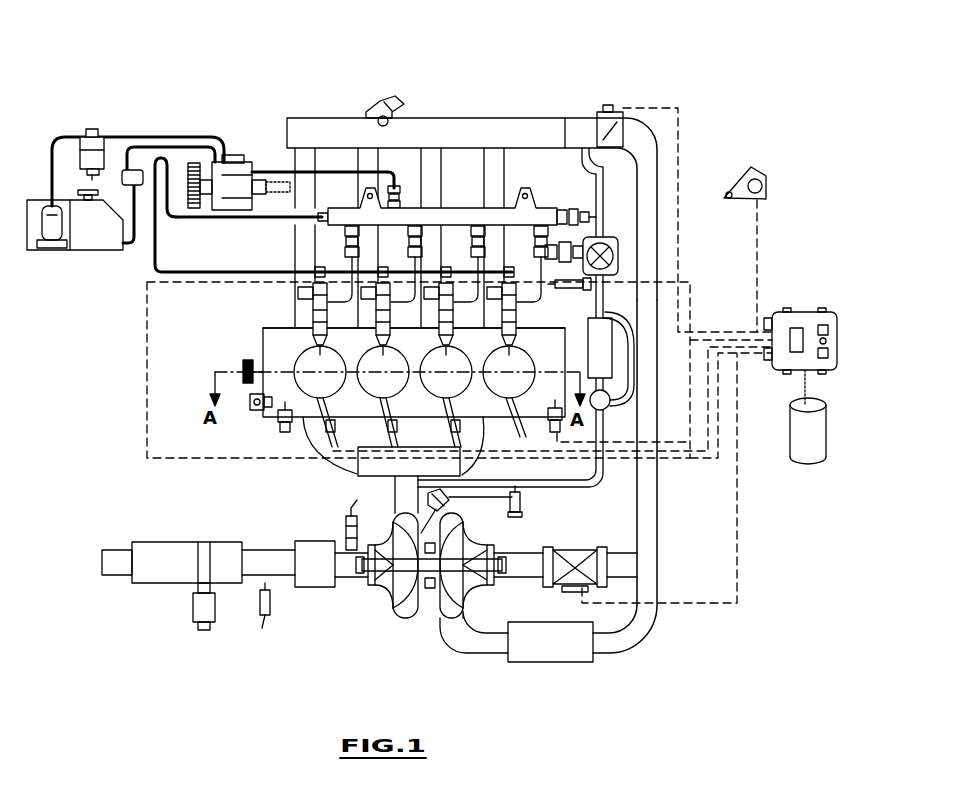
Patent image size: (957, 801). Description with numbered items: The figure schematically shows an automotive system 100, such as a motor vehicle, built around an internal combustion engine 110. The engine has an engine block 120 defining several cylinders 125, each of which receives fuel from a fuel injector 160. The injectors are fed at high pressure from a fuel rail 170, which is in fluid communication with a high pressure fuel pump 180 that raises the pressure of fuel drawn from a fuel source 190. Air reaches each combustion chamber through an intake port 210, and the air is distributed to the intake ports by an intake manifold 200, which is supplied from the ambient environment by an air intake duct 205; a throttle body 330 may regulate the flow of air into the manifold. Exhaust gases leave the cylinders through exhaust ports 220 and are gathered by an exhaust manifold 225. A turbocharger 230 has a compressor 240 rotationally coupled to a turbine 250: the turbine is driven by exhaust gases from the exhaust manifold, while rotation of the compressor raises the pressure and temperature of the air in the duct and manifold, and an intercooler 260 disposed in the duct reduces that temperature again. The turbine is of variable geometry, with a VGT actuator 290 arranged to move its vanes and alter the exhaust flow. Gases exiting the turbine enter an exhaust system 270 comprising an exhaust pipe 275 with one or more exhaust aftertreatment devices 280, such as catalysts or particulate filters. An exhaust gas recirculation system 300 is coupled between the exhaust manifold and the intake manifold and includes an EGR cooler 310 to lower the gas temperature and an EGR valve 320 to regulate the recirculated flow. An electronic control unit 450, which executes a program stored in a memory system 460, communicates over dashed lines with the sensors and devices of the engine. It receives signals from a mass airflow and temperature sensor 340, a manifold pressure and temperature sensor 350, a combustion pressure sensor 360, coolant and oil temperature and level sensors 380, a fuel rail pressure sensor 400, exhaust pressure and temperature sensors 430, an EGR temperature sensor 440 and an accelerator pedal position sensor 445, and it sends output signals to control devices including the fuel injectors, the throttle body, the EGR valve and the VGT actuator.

The automotive system 100 is at (203, 99).
The internal combustion engine 110 is at (524, 98).
The engine block 120 is at (263, 331).
The cylinder 125 is at (527, 352).
The fuel injector 160 is at (318, 306).
The fuel rail 170 is at (320, 222).
The high pressure fuel pump 180 is at (245, 158).
The fuel source 190 is at (96, 237).
The intake manifold 200 is at (440, 132).
The air intake duct 205 is at (653, 527).
The intake port 210 is at (303, 330).
The exhaust port 220 is at (313, 427).
The exhaust manifold 225 is at (347, 504).
The turbocharger 230 is at (425, 576).
The compressor 240 is at (455, 592).
The turbine 250 is at (403, 585).
The intercooler 260 is at (572, 650).
The exhaust system 270 is at (188, 576).
The exhaust pipe 275 is at (112, 565).
The exhaust aftertreatment device 280 is at (157, 565).
The VGT actuator 290 is at (450, 508).
The exhaust gas recirculation system 300 is at (572, 500).
The EGR cooler 310 is at (601, 362).
The EGR valve 320 is at (604, 237).
The throttle body 330 is at (612, 103).
The mass airflow and temperature sensor 340 is at (572, 587).
The manifold pressure and temperature sensor 350 is at (378, 104).
The combustion pressure sensor 360 is at (383, 466).
The coolant and oil temperature and level sensors 380 is at (276, 420).
The fuel rail pressure sensor 400 is at (586, 213).
The exhaust pressure and temperature sensors 430 is at (212, 632).
The EGR temperature sensor 440 is at (600, 283).
The accelerator pedal position sensor 445 is at (760, 175).
The electronic control unit 450 is at (805, 312).
The memory system 460 is at (808, 447).